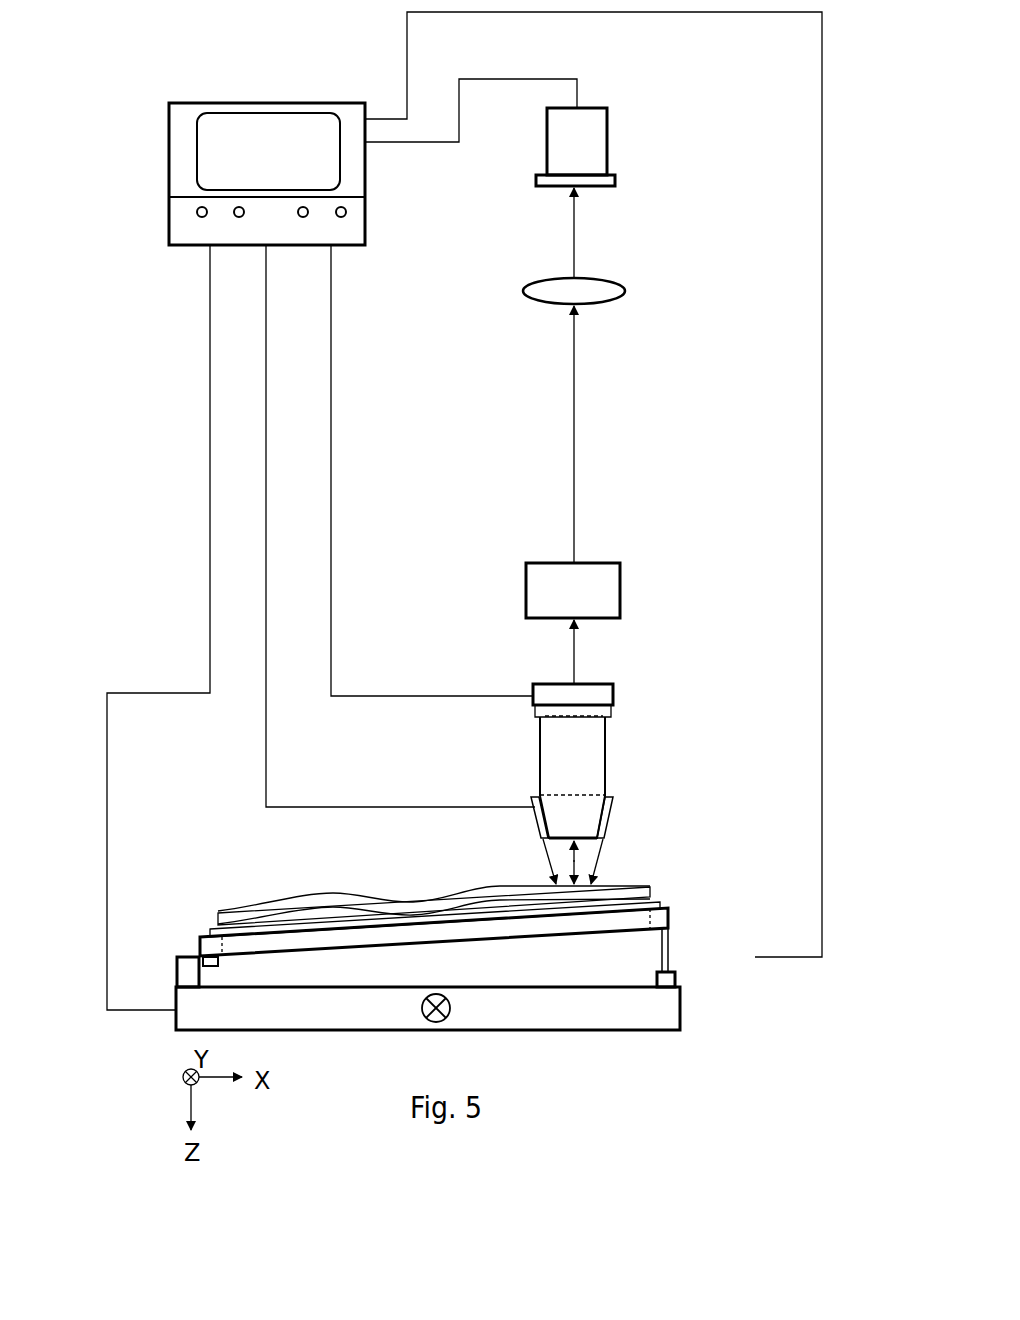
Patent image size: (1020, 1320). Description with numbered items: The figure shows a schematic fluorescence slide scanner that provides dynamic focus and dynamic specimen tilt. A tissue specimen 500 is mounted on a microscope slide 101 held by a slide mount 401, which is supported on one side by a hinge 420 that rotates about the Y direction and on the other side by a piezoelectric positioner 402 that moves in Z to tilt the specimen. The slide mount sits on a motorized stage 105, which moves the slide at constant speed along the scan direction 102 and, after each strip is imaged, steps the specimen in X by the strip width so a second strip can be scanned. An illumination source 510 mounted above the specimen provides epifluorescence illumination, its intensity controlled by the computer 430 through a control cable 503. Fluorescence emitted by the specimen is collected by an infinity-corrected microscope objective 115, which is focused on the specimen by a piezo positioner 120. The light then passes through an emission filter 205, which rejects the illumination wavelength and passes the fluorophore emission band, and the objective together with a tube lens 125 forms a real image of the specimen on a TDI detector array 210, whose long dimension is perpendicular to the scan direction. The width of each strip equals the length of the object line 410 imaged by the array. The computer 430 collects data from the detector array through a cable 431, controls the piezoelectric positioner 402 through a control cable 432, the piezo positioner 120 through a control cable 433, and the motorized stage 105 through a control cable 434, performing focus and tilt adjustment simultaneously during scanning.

The computer 430 is at (283, 102).
The cable 431 is at (507, 79).
The control cable 432 is at (622, 12).
The control cable 433 is at (331, 508).
The control cable 434 is at (208, 508).
The control cable 503 is at (266, 782).
The TDI detector array 210 is at (608, 142).
The tube lens 125 is at (625, 292).
The emission filter 205 is at (622, 592).
The piezo positioner 120 is at (615, 692).
The microscope objective 115 is at (605, 755).
The illumination source 510 is at (608, 820).
The object line 410 is at (576, 884).
The tissue specimen 500 is at (623, 887).
The microscope slide 101 is at (662, 902).
The slide mount 401 is at (669, 917).
The piezoelectric positioner 402 is at (672, 937).
The motorized stage 105 is at (681, 1002).
The scan direction 102 is at (436, 1022).
The hinge 420 is at (199, 956).